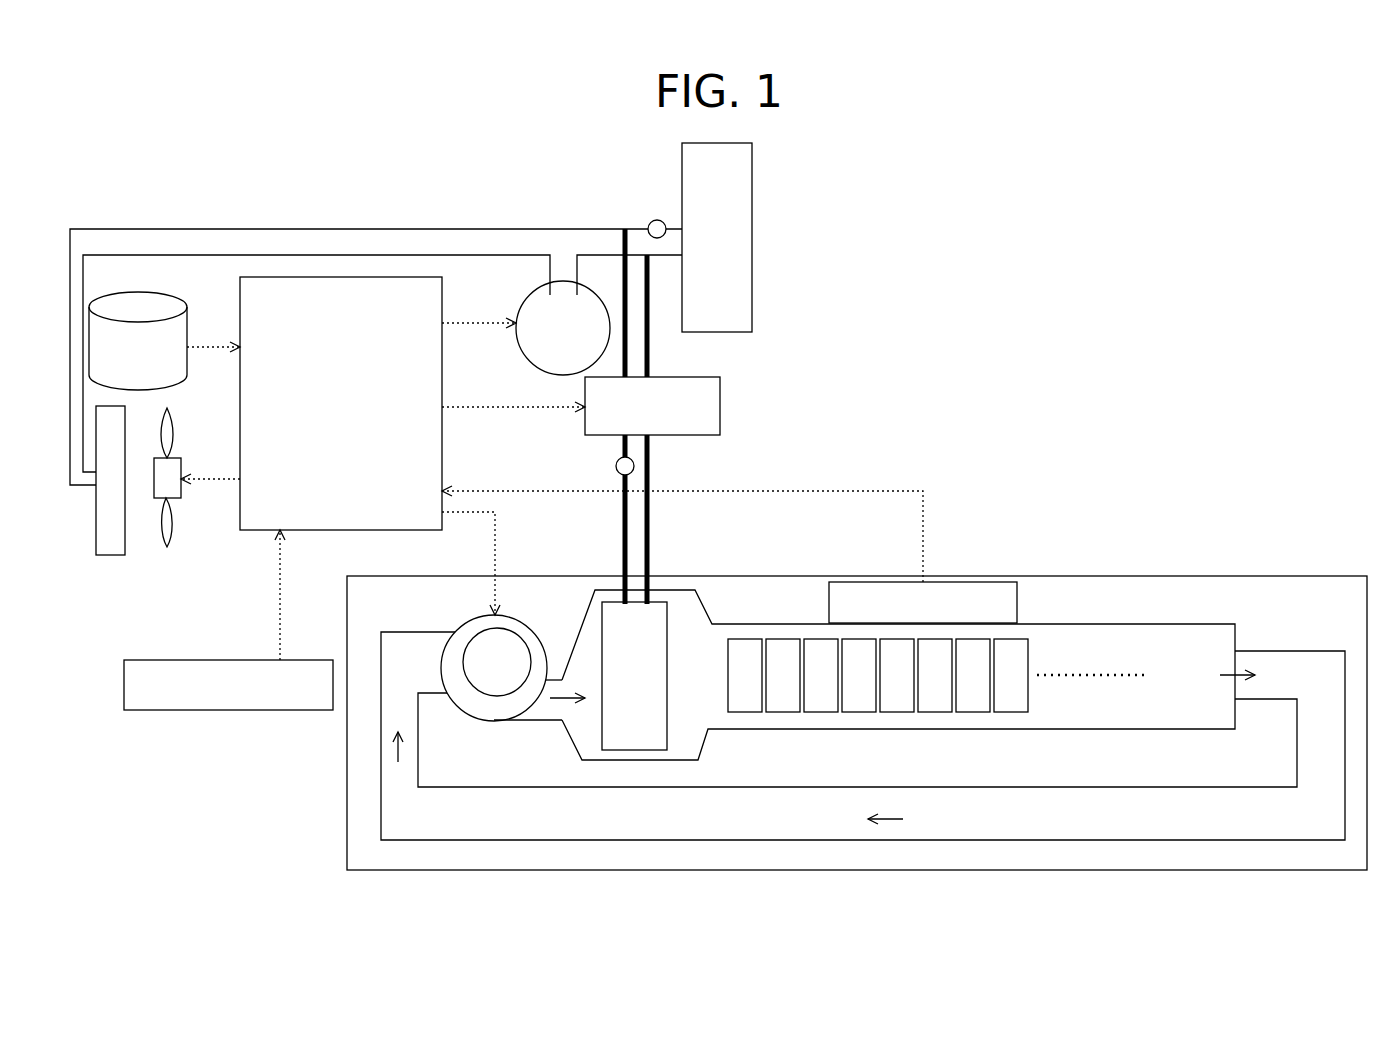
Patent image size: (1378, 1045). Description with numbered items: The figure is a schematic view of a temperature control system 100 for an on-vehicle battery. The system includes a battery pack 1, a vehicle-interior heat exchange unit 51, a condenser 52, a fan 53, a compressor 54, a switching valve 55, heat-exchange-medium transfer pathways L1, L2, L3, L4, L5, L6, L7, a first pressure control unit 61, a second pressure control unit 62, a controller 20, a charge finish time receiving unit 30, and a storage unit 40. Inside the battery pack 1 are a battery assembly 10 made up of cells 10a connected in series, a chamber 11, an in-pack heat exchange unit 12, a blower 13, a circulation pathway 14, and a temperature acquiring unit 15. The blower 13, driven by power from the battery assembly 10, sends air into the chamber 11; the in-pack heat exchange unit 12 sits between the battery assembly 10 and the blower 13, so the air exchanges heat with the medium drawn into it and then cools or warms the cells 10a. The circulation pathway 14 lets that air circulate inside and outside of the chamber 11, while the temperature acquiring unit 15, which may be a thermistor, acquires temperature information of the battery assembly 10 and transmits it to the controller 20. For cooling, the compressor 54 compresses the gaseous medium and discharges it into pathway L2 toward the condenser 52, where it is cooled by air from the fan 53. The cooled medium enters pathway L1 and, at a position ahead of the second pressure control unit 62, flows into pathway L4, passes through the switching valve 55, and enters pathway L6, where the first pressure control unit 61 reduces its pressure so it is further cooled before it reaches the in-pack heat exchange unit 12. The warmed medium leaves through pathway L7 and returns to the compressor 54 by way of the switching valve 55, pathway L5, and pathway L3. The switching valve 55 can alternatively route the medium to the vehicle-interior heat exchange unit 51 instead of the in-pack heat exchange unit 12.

The temperature control system 100 is at (905, 345).
The battery pack 1 is at (1205, 576).
The battery assembly 10 is at (938, 712).
The cell 10a is at (878, 675).
The chamber 11 is at (1085, 624).
The in-pack heat exchange unit 12 is at (658, 736).
The blower 13 is at (500, 706).
The circulation pathway 14 is at (1073, 840).
The temperature acquiring unit 15 is at (960, 582).
The controller 20 is at (255, 515).
The charge finish time receiving unit 30 is at (262, 701).
The storage unit 40 is at (183, 320).
The vehicle-interior heat exchange unit 51 is at (745, 190).
The condenser 52 is at (100, 556).
The fan 53 is at (165, 485).
The compressor 54 is at (543, 343).
The switching valve 55 is at (712, 418).
The first pressure control unit 61 is at (616, 466).
The second pressure control unit 62 is at (657, 220).
The heat-exchange-medium transfer pathway L1 is at (533, 229).
The heat-exchange-medium transfer pathway L2 is at (500, 255).
The heat-exchange-medium transfer pathway L3 is at (605, 257).
The heat-exchange-medium transfer pathway L4 is at (622, 240).
The heat-exchange-medium transfer pathway L5 is at (650, 365).
The heat-exchange-medium transfer pathway L6 is at (622, 518).
The heat-exchange-medium transfer pathway L7 is at (650, 537).